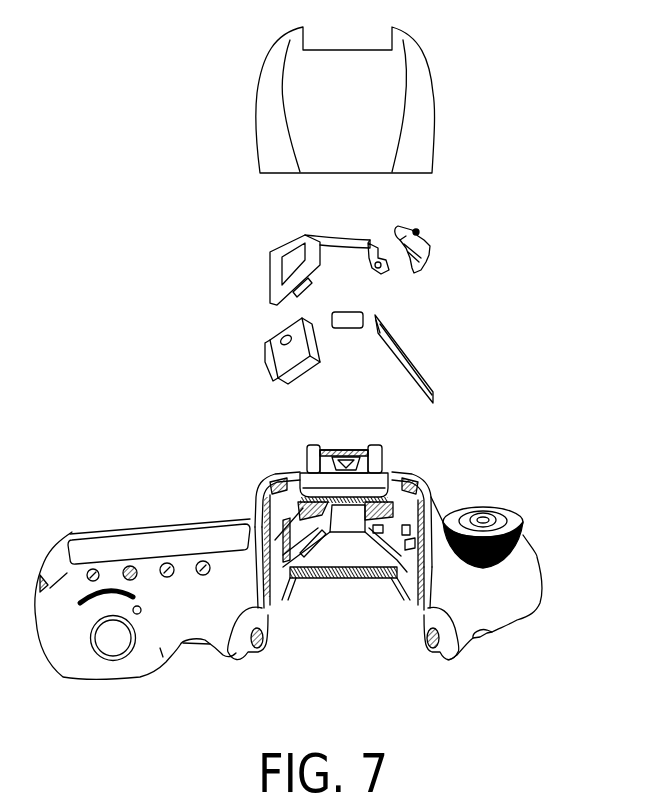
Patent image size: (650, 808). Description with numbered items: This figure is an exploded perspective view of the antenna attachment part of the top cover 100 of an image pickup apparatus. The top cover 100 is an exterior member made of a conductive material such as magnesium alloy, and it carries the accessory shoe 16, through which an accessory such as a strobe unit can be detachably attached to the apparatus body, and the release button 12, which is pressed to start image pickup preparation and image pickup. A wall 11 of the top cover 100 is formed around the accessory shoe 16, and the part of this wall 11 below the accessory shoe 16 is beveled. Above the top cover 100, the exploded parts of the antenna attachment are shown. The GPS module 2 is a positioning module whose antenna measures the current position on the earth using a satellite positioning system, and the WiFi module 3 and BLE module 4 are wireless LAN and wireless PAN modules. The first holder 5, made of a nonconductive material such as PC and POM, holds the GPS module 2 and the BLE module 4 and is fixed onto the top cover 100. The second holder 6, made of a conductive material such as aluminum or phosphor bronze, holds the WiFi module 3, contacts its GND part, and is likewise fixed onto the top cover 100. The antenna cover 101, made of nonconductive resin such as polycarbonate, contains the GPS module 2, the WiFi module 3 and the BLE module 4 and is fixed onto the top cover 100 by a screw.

The antenna cover 101 is at (410, 110).
The first holder 5 is at (270, 272).
The second holder 6 is at (430, 246).
The GPS module 2 is at (265, 350).
The BLE module 4 is at (363, 312).
The WiFi module 3 is at (407, 345).
The accessory shoe 16 is at (300, 460).
The top cover 100 is at (72, 532).
The wall 11 is at (430, 505).
The release button 12 is at (113, 640).